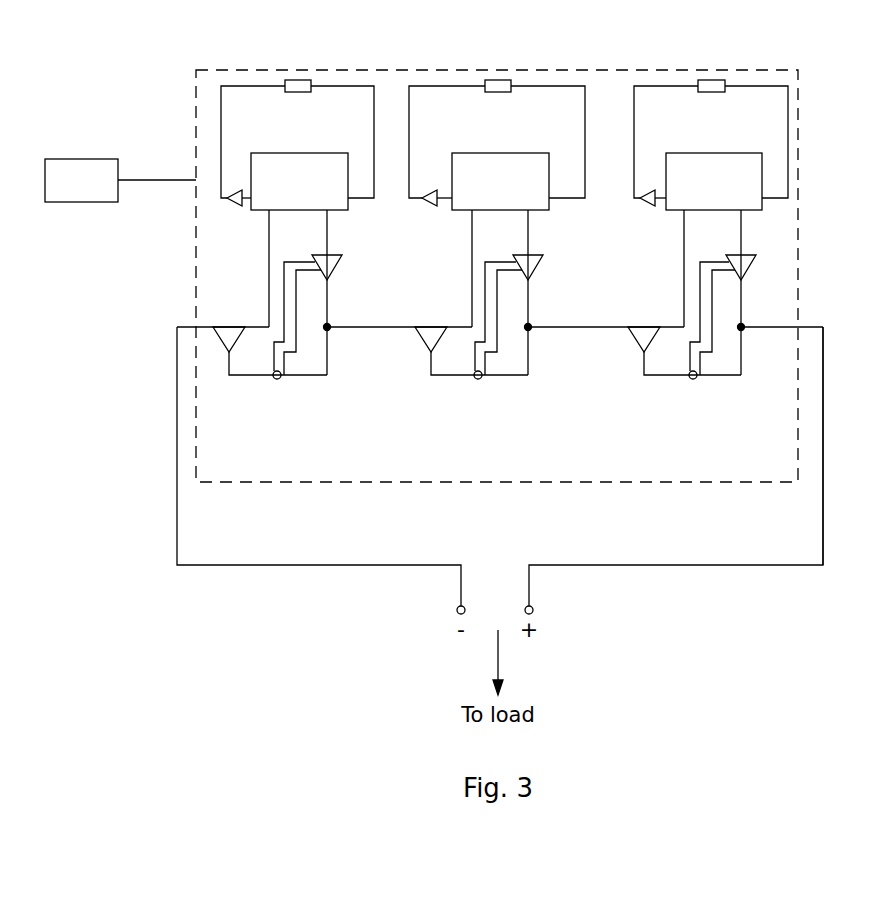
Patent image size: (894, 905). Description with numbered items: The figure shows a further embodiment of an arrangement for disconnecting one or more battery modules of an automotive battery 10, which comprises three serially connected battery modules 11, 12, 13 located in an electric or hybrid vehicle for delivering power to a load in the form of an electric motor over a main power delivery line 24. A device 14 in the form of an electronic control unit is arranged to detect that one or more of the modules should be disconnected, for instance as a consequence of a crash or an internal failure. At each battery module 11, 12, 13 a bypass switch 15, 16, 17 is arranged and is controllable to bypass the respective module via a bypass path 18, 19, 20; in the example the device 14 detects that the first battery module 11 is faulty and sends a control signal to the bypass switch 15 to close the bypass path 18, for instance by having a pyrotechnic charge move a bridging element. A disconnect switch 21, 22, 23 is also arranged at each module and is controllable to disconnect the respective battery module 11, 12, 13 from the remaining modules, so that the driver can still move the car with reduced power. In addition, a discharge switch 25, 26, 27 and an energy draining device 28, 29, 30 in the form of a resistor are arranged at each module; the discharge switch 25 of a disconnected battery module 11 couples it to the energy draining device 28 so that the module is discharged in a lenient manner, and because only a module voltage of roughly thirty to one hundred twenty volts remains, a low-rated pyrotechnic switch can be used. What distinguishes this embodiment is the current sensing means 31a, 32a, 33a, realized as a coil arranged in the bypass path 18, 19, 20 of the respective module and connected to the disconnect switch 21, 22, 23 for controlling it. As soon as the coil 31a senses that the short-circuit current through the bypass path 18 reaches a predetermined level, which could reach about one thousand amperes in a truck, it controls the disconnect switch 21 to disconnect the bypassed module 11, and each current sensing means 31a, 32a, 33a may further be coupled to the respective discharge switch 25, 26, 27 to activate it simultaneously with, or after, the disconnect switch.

The automotive battery 10 is at (788, 78).
The first battery module 11 is at (327, 160).
The second battery module 12 is at (523, 160).
The third battery module 13 is at (735, 160).
The device for detecting that a battery module is to be disconnected 14 is at (99, 170).
The bypass switch 15 is at (227, 325).
The bypass switch 16 is at (434, 325).
The bypass switch 17 is at (642, 325).
The bypass path 18 is at (327, 362).
The bypass path 19 is at (528, 362).
The bypass path 20 is at (741, 362).
The disconnect switch 21 is at (337, 262).
The disconnect switch 22 is at (538, 262).
The disconnect switch 23 is at (751, 262).
The main power delivery line 24 is at (809, 327).
The discharge switch 25 is at (227, 188).
The discharge switch 26 is at (422, 188).
The discharge switch 27 is at (640, 188).
The energy draining device 28 is at (292, 78).
The energy draining device 29 is at (490, 78).
The energy draining device 30 is at (708, 78).
The current sensing means 31a is at (277, 379).
The current sensing means 32a is at (478, 379).
The current sensing means 33a is at (693, 379).